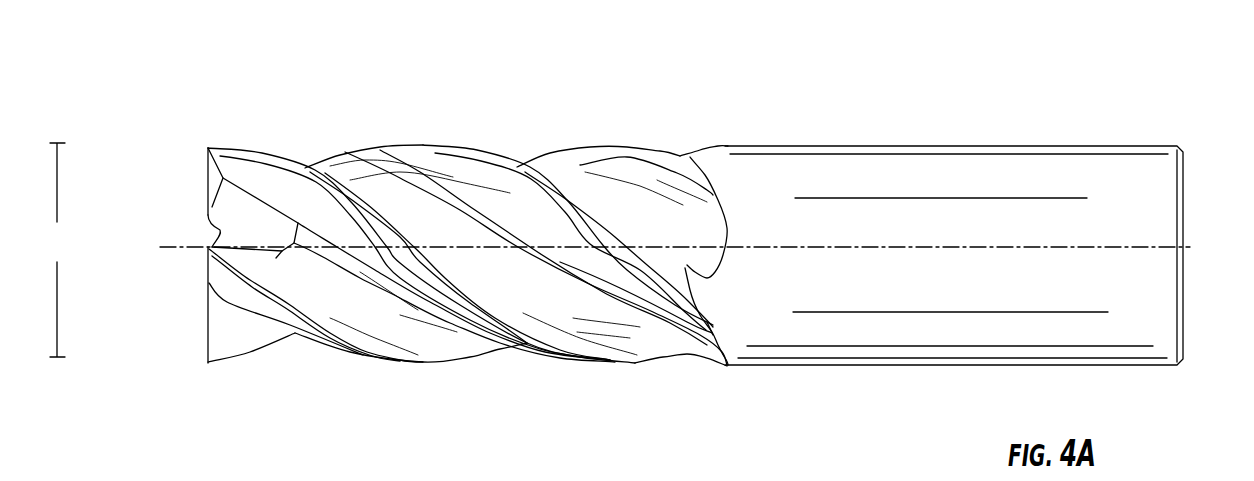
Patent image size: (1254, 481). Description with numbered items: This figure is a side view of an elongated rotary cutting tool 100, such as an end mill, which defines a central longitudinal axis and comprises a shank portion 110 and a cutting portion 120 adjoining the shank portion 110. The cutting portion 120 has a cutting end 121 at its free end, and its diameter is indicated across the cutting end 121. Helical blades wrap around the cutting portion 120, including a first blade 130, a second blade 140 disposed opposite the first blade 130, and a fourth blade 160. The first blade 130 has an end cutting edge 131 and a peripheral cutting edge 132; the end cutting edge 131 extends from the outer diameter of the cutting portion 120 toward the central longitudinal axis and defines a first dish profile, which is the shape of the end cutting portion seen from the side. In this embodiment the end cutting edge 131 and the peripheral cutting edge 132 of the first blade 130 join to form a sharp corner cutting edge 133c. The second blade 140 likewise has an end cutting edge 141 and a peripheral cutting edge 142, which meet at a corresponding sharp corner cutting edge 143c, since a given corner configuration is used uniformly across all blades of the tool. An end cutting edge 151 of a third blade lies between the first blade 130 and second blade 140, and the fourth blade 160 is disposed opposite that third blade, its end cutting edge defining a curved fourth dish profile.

The elongated rotary cutting tool 100 is at (668, 84).
The shank portion 110 is at (921, 132).
The cutting portion 120 is at (420, 131).
The cutting end 121 is at (116, 219).
The first blade 130 is at (272, 152).
The end cutting edge 131 is at (208, 328).
The peripheral cutting edge 132 is at (230, 362).
The sharp corner cutting edge 133c is at (205, 367).
The second blade 140 is at (662, 480).
The end cutting edge 141 is at (205, 182).
The peripheral cutting edge 142 is at (230, 147).
The sharp corner cutting edge 143c is at (206, 147).
The end cutting edge 151 is at (213, 283).
The fourth blade 160 is at (487, 153).